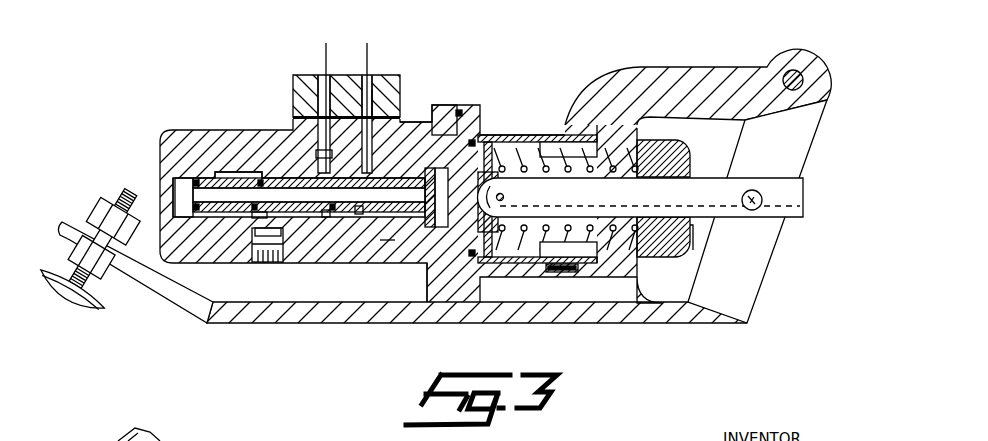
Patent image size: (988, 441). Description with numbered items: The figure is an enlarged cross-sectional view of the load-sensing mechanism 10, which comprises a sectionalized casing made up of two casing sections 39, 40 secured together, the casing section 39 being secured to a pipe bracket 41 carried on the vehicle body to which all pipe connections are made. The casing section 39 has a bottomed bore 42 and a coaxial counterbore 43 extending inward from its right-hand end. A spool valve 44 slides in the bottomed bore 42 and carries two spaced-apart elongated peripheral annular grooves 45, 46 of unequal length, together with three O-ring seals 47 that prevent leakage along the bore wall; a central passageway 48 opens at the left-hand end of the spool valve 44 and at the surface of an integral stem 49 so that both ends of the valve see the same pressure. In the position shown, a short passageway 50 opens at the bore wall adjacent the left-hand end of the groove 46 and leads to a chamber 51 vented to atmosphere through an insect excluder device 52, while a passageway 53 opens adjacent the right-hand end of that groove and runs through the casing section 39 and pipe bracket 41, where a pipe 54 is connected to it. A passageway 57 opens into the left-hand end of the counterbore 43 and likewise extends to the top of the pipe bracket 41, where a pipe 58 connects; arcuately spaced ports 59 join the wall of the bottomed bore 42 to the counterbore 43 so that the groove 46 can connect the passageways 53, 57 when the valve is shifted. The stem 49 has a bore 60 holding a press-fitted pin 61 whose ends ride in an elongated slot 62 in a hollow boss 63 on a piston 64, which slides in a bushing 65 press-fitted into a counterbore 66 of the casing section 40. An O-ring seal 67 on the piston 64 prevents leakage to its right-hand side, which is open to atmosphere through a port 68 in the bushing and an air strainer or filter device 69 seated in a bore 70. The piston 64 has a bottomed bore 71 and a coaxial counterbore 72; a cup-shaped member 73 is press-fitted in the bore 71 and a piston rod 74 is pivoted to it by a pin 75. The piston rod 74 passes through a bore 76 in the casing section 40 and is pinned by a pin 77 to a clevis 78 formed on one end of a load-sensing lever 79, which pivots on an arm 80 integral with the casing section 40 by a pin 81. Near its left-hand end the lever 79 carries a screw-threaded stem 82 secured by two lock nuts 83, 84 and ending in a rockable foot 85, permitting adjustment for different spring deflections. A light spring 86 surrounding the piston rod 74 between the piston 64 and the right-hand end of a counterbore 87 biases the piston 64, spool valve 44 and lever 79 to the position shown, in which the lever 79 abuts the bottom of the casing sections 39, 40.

The load-sensing mechanism 10 is at (240, 128).
The casing section 39 is at (398, 135).
The casing section 40 is at (522, 135).
The pipe bracket 41 is at (300, 83).
The bottomed bore 42 is at (178, 182).
The counterbore 43 is at (416, 245).
The spool valve 44 is at (178, 190).
The elongated peripheral annular groove 45 is at (206, 217).
The elongated peripheral annular groove 46 is at (288, 213).
The O-ring seals 47 is at (232, 174).
The central passageway 48 is at (182, 217).
The stem 49 is at (326, 212).
The short passageway 50 is at (258, 216).
The chamber 51 is at (258, 236).
The insect excluder device 52 is at (266, 263).
The passageway 53 is at (320, 103).
The pipe 54 is at (326, 53).
The passageway 57 is at (372, 100).
The pipe 58 is at (367, 53).
The ports 59 is at (334, 153).
The bore 60 is at (428, 204).
The pin 61 is at (443, 210).
The elongated slot 62 is at (433, 108).
The hollow boss 63 is at (386, 245).
The piston 64 is at (488, 145).
The bushing 65 is at (590, 128).
The counterbore 66 is at (548, 142).
The O-ring seal 67 is at (462, 110).
The port 68 is at (572, 230).
The air strainer or filter device 69 is at (568, 272).
The bore 70 is at (555, 272).
The bottomed bore 71 is at (478, 182).
The counterbore 72 is at (545, 230).
The cup-shaped member 73 is at (503, 193).
The piston rod 74 is at (709, 188).
The pin 75 is at (504, 198).
The bore 76 is at (668, 247).
The pin 77 is at (757, 206).
The clevis 78 is at (795, 157).
The load-sensing lever 79 is at (330, 323).
The arm 80 is at (688, 75).
The pin 81 is at (803, 80).
The screw-threaded stem 82 is at (123, 199).
The lock nut 83 is at (97, 208).
The lock nut 84 is at (76, 220).
The foot 85 is at (58, 284).
The light spring 86 is at (652, 250).
The counterbore 87 is at (655, 155).